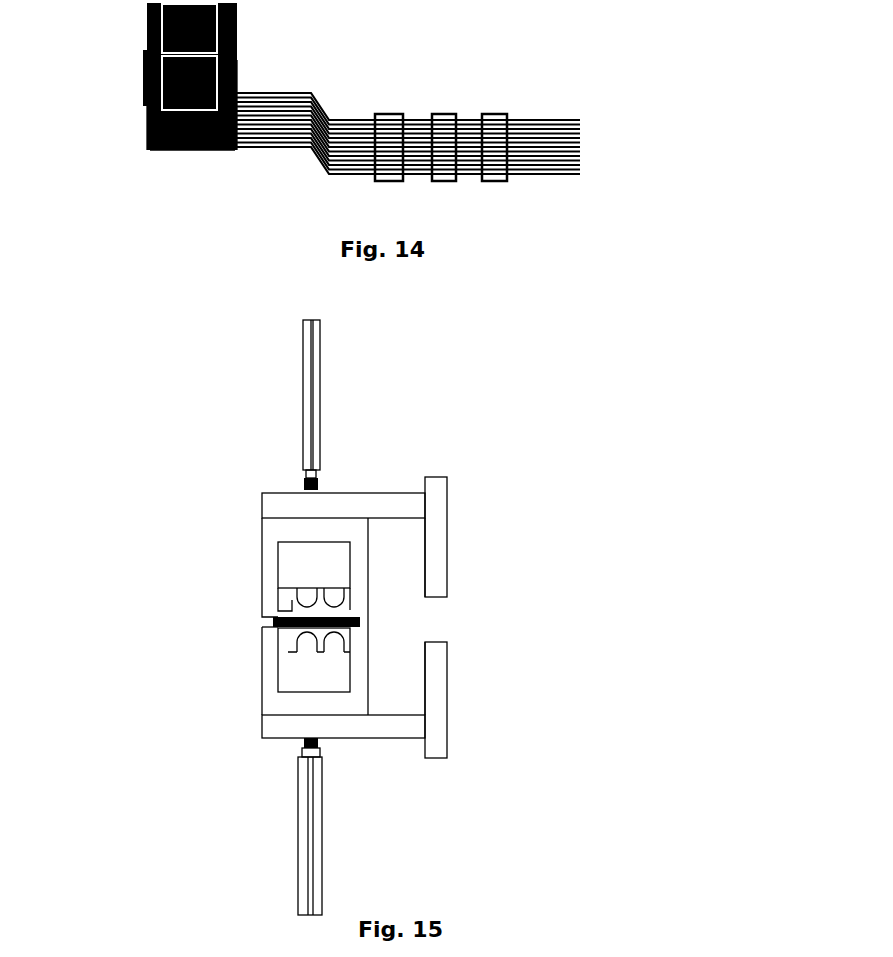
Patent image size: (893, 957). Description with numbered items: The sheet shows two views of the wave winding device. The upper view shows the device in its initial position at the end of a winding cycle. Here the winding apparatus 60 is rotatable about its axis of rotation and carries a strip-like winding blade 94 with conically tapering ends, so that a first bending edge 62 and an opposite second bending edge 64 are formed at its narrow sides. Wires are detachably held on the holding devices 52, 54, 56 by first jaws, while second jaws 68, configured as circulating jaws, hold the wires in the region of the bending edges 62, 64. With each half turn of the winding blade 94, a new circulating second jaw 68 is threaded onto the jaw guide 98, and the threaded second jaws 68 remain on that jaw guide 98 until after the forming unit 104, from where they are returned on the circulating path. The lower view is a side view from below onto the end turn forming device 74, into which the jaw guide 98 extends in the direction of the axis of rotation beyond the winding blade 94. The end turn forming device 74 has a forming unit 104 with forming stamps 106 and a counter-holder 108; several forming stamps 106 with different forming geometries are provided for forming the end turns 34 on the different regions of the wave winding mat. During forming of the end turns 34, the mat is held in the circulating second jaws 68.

In FIG. 15, the end turns 34 is at (277, 620).
In FIG. 14, the holding device 52 is at (495, 183).
In FIG. 14, the holding device 54 is at (445, 183).
In FIG. 14, the holding device 56 is at (387, 183).
In FIG. 14, the winding apparatus 60 is at (140, 124).
In FIG. 14, the first bending edge 62 is at (140, 147).
In FIG. 14, the second bending edge 64 is at (233, 152).
In FIG. 14, the second jaw 68 is at (145, 28).
In FIG. 15, the second jaw 68 is at (315, 592).
In FIG. 15, the end turn forming device 74 is at (435, 612).
In FIG. 14, the winding blade 94 is at (183, 152).
In FIG. 15, the jaw guide 98 is at (325, 547).
In FIG. 15, the forming unit 104 is at (552, 494).
In FIG. 15, the forming stamp 106 is at (265, 593).
In FIG. 15, the counter-holder 108 is at (360, 682).